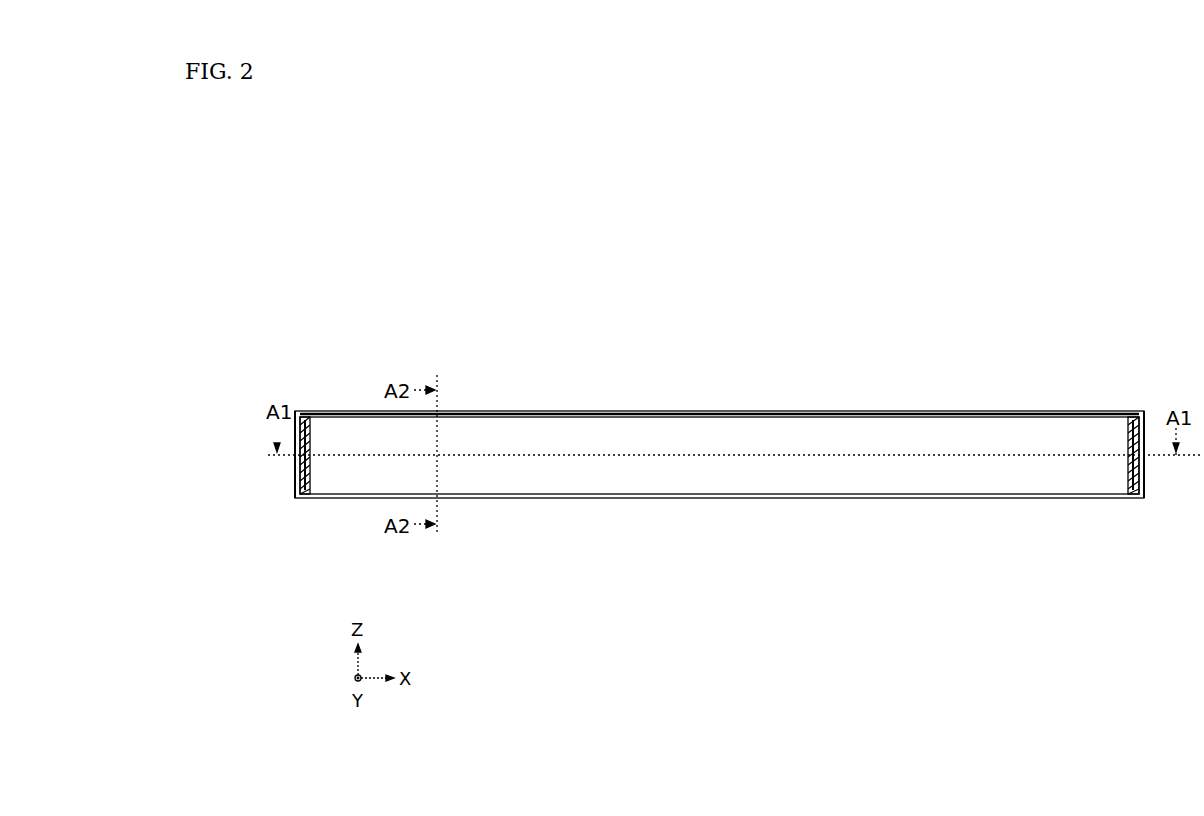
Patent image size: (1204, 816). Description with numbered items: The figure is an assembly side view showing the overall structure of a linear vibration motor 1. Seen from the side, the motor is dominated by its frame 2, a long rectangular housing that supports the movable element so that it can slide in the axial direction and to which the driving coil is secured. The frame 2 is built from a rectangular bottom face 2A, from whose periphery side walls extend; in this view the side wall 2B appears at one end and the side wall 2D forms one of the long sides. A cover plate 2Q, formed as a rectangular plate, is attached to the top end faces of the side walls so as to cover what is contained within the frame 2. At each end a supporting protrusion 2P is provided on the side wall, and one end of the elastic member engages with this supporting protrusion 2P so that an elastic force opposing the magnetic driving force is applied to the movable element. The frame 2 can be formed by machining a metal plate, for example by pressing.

The linear vibration motor 1 is at (957, 320).
The frame 2 is at (760, 498).
The rectangular bottom face 2A is at (295, 477).
The side wall 2B is at (1145, 487).
The side wall 2D is at (650, 487).
The supporting protrusion 2P is at (308, 466).
The cover plate 2Q is at (1040, 411).